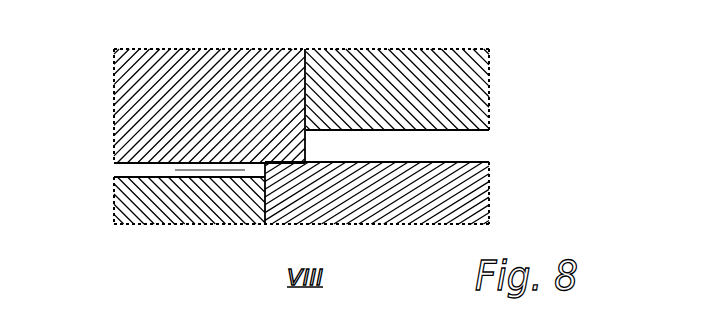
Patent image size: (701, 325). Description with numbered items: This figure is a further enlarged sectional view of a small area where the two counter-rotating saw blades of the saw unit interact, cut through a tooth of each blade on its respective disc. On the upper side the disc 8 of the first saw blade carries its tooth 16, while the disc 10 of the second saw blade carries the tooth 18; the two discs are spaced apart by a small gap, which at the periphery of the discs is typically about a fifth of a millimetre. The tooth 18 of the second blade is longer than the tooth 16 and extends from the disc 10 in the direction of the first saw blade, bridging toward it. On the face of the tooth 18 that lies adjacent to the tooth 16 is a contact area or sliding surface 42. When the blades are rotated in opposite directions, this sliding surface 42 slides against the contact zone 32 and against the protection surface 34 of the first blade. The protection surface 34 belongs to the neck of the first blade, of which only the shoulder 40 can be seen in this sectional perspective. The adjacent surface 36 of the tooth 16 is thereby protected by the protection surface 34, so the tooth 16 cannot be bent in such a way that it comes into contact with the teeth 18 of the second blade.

The disc 8 is at (380, 198).
The disc 10 is at (413, 68).
The tooth 16 is at (113, 205).
The tooth 18 is at (113, 108).
The contact zone 32 is at (286, 162).
The protection surface 34 is at (218, 163).
The adjacent surface 36 is at (177, 176).
The shoulder 40 is at (175, 171).
The sliding surface 42 is at (244, 164).